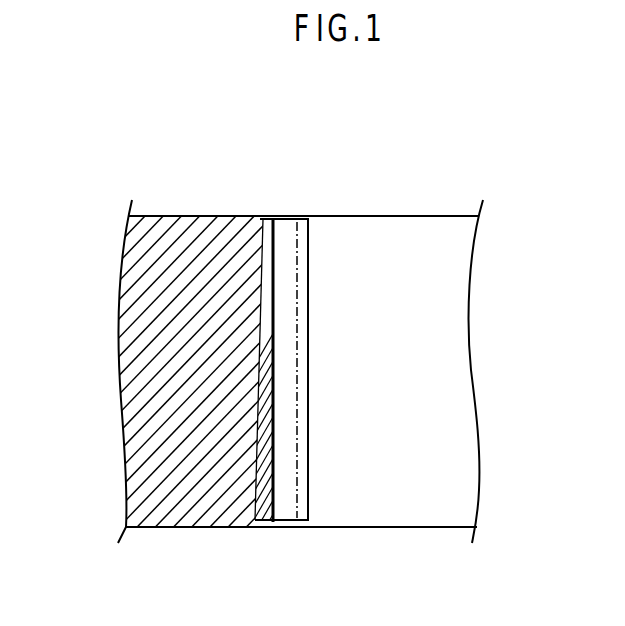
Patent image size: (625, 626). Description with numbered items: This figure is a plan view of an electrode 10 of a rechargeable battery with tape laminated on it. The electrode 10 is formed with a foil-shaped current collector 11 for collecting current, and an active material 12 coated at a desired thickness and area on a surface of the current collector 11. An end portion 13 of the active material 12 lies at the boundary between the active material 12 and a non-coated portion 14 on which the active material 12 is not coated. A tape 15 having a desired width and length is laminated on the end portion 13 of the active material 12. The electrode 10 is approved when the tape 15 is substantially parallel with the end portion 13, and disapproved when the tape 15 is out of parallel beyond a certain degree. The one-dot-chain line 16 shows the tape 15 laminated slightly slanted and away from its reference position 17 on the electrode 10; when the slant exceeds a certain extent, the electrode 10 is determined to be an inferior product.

The electrode 10 is at (448, 162).
The current collector 11 is at (303, 529).
The active material 12 is at (138, 378).
The end portion 13 is at (273, 259).
The non-coated portion 14 is at (452, 421).
The tape 15 is at (296, 276).
The one-dot-chain line 16 is at (293, 389).
The reference position 17 is at (303, 318).